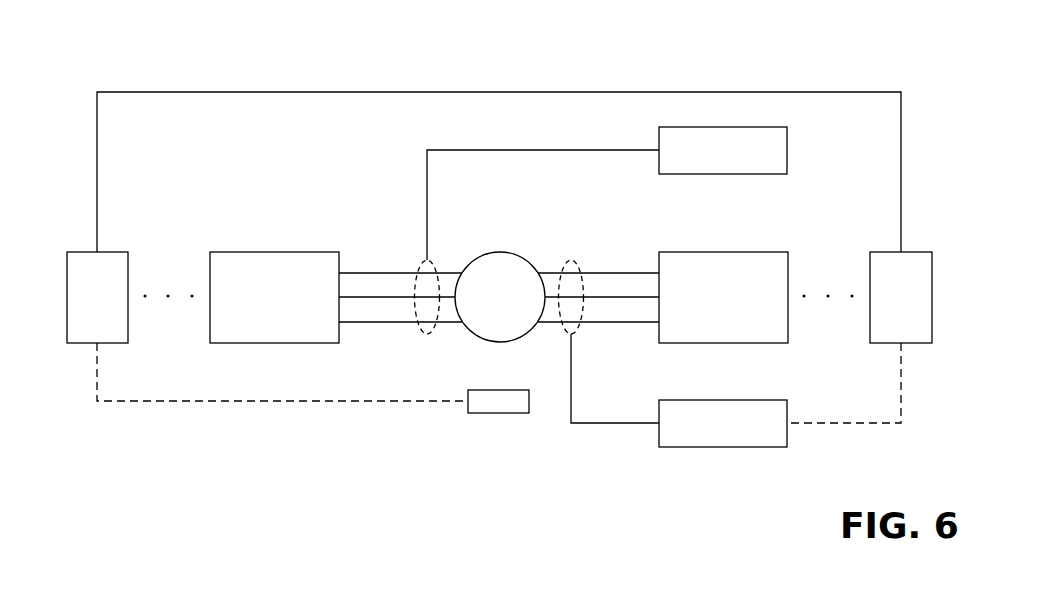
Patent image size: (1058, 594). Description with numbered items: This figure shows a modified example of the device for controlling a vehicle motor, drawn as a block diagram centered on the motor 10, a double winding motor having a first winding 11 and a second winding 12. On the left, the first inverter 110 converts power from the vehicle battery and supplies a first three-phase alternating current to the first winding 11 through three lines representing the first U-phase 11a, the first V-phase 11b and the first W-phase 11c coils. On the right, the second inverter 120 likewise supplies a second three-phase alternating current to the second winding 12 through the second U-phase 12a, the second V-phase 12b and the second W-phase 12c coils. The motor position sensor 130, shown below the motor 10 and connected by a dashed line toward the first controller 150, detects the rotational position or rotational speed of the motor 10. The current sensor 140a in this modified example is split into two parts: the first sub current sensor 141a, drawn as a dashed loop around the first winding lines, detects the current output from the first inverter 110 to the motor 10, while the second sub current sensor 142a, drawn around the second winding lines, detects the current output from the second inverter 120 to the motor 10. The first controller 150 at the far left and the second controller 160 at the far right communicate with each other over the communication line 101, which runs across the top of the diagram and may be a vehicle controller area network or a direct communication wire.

The motor 10 is at (500, 252).
The first winding 11 is at (302, 352).
The first U-phase 11a is at (400, 273).
The first V-phase 11b is at (350, 297).
The first W-phase 11c is at (400, 322).
The second winding 12 is at (401, 366).
The second U-phase 12a is at (593, 297).
The second V-phase 12b is at (638, 273).
The second W-phase 12c is at (615, 322).
The communication line 101 is at (545, 92).
The first inverter 110 is at (271, 252).
The second inverter 120 is at (721, 252).
The motor position sensor 130 is at (497, 413).
The current sensor 140a is at (522, 297).
The first sub current sensor 141a is at (723, 447).
The second sub current sensor 142a is at (720, 127).
The first controller 150 is at (76, 252).
The second controller 160 is at (912, 252).